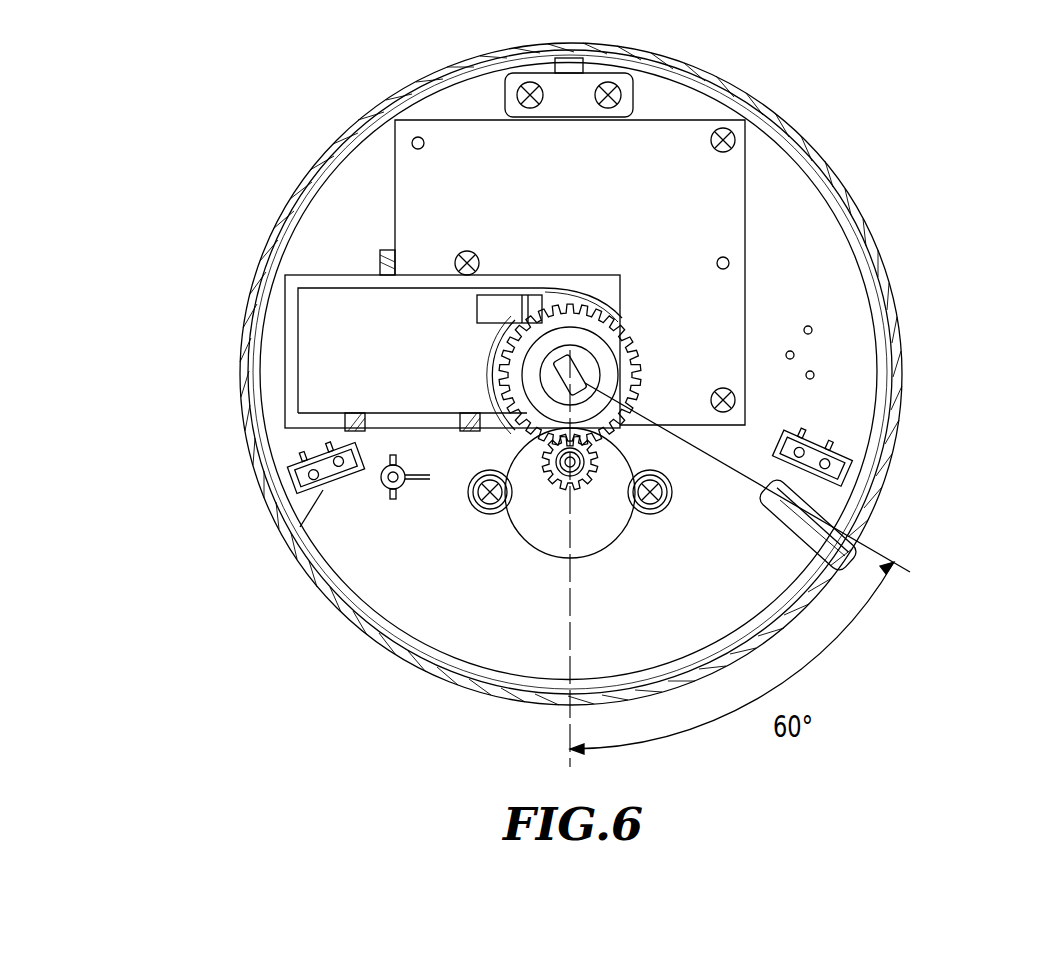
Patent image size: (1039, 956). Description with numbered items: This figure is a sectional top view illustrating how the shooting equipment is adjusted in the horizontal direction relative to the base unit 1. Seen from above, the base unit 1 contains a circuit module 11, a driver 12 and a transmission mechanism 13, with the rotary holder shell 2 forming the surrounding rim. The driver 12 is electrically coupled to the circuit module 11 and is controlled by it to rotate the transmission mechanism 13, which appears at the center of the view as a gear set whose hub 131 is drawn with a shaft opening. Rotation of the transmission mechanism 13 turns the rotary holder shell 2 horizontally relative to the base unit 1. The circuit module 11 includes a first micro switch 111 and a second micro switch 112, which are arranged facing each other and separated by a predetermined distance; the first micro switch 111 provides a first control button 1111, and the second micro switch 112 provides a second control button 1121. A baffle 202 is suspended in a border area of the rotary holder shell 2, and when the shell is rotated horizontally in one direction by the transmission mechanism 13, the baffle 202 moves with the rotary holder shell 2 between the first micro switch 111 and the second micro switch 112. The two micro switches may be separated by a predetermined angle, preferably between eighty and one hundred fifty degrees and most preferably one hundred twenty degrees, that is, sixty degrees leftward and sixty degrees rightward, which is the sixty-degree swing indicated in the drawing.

The base unit 1 is at (383, 580).
The rotary holder shell 2 is at (415, 660).
The circuit module 11 is at (350, 240).
The driver 12 is at (547, 528).
The transmission mechanism 13 is at (545, 440).
The gear hub shaft hole 131 is at (587, 362).
The first micro switch 111 is at (825, 462).
The first control button 1111 is at (805, 488).
The second micro switch 112 is at (328, 481).
The second control button 1121 is at (300, 527).
The baffle 202 is at (858, 520).